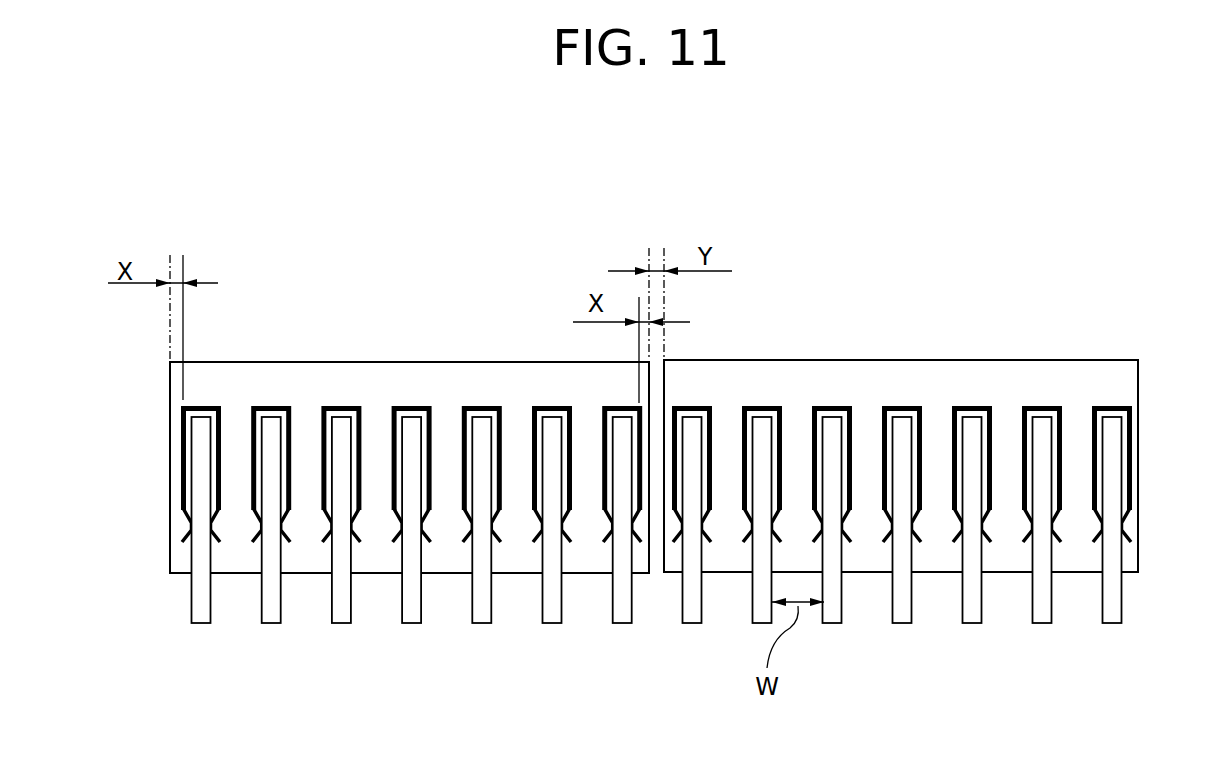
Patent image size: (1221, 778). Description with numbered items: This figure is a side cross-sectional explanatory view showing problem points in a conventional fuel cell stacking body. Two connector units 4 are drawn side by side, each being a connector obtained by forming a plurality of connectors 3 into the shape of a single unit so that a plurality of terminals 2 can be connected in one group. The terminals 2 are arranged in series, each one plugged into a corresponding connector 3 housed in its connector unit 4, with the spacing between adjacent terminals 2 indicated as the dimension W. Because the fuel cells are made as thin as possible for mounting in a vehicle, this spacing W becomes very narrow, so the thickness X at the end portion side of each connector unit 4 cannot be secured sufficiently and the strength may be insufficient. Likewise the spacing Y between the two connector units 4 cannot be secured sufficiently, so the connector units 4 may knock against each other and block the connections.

The terminal 2 is at (413, 612).
The connector 3 is at (405, 407).
The connector unit 4 is at (288, 343).